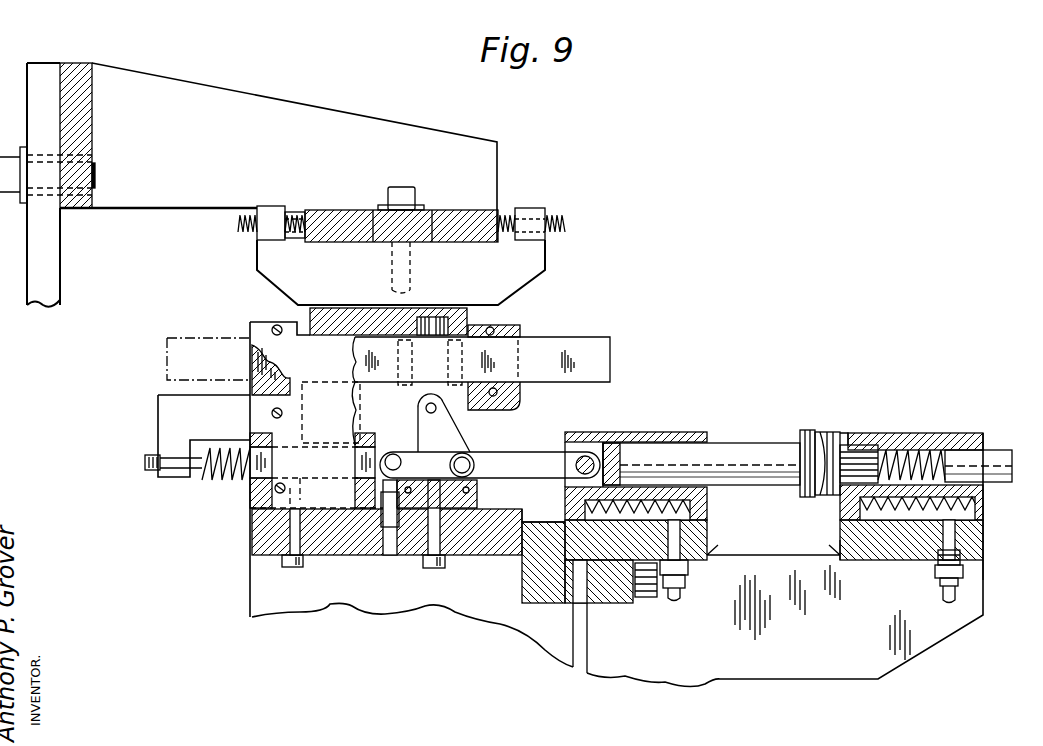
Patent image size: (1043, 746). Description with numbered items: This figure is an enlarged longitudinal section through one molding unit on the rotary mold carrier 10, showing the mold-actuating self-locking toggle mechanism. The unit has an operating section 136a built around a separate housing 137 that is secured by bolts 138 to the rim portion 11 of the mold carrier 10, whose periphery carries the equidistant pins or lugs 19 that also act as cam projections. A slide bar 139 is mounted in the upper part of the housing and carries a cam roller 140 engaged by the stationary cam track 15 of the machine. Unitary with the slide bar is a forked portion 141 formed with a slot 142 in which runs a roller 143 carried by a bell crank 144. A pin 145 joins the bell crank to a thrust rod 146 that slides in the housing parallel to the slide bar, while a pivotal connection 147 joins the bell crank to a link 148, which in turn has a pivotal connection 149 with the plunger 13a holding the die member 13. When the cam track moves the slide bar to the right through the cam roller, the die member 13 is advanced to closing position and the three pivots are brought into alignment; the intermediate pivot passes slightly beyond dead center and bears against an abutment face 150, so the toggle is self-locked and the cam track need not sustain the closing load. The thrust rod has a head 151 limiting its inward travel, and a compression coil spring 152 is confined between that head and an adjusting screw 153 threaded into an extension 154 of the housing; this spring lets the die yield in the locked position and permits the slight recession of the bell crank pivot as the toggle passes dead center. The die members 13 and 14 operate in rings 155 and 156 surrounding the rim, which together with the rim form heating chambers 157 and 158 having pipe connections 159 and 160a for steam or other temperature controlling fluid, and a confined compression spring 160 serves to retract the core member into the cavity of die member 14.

The mold carrier 10 is at (888, 380).
The rim portion 11 is at (897, 452).
The die member 13 is at (800, 428).
The plunger 13a is at (745, 450).
The die member 14 is at (831, 430).
The cam track 15 is at (310, 310).
The lugs 19 is at (1000, 462).
The operating section 136a is at (238, 350).
The housing 137 is at (246, 498).
The bolts 138 is at (297, 568).
The slide bar 139 is at (580, 345).
The cam roller 140 is at (432, 320).
The forked portion 141 is at (424, 393).
The slot 142 is at (425, 404).
The roller 143 is at (425, 410).
The bell crank 144 is at (455, 436).
The pin 145 is at (393, 456).
The thrust rod 146 is at (355, 450).
The pivotal connection 147 is at (452, 458).
The link 148 is at (522, 460).
The pivotal connection 149 is at (580, 456).
The abutment face 150 is at (476, 495).
The head 151 is at (248, 478).
The compression coil spring 152 is at (240, 470).
The adjusting screw 153 is at (150, 471).
The extension 154 is at (164, 422).
The ring 155 is at (638, 432).
The ring 156 is at (925, 445).
The heating chamber 157 is at (680, 513).
The heating chamber 158 is at (855, 510).
The pipe connection 159 is at (678, 590).
The compression spring 160 is at (890, 452).
The pipe connection 160a is at (942, 592).